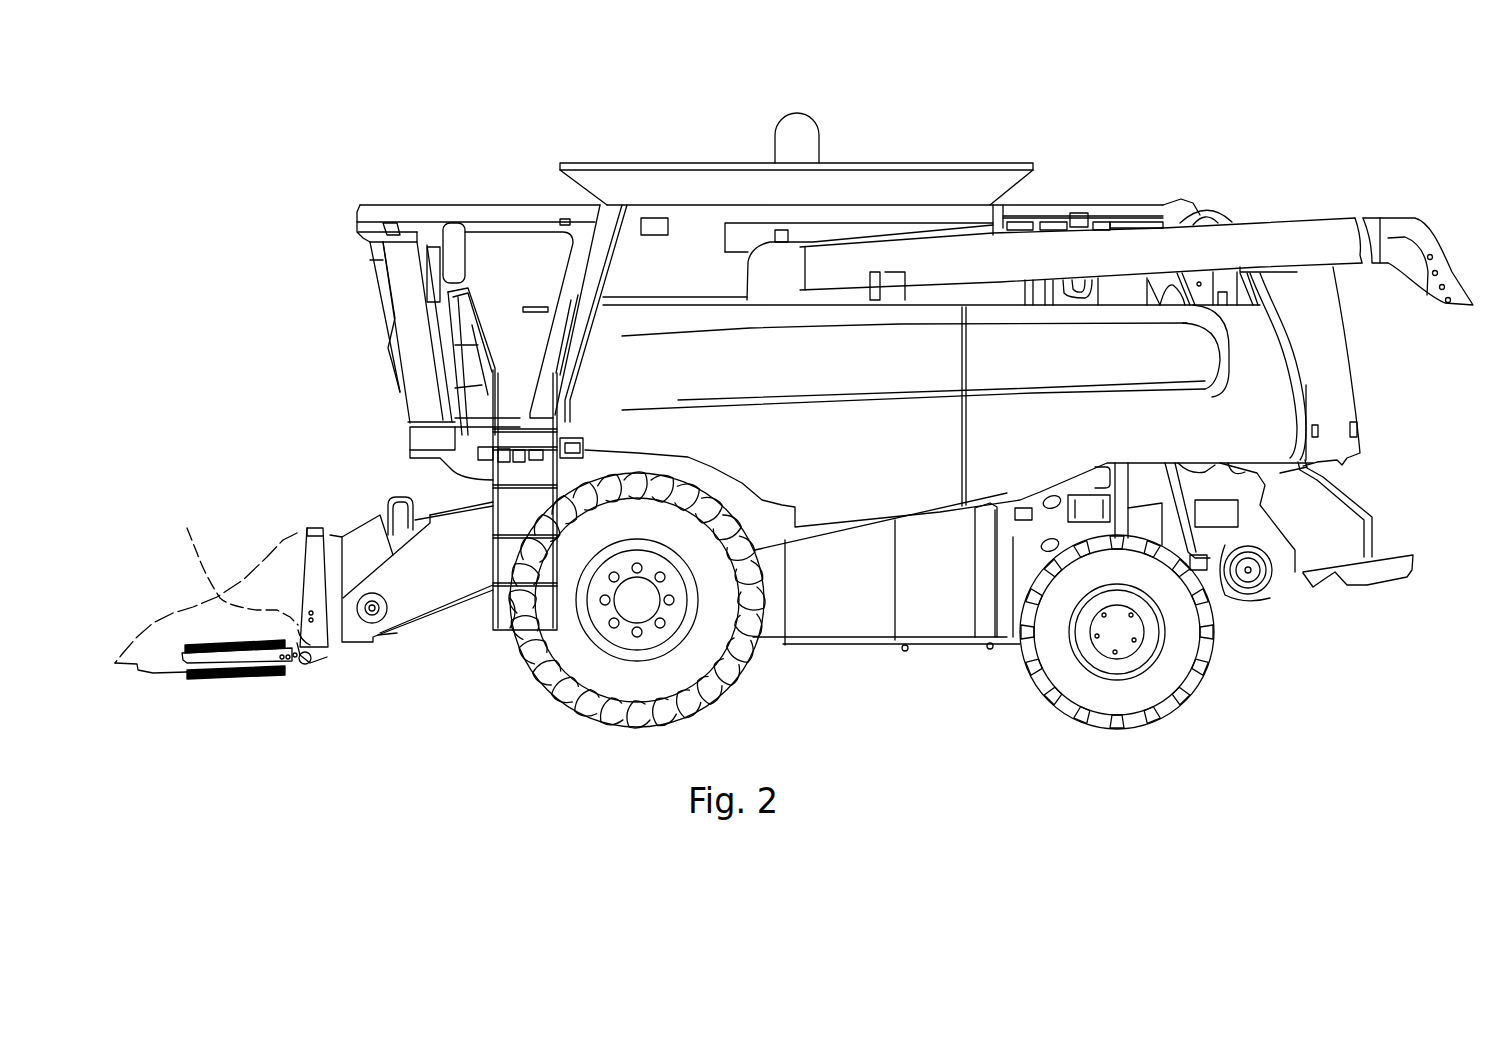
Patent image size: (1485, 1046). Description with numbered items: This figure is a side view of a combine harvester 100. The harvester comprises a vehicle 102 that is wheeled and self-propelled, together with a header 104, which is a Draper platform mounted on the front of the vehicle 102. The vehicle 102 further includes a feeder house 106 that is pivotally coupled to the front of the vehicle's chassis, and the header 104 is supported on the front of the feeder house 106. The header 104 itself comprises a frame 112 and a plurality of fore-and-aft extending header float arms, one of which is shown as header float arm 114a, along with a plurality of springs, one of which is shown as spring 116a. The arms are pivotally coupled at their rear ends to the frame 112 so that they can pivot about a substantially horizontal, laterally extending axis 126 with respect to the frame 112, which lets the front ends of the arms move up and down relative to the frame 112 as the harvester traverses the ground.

The combine harvester 100 is at (277, 190).
The vehicle 102 is at (522, 210).
The header 104 is at (253, 527).
The feeder house 106 is at (450, 547).
The frame 112 is at (325, 528).
The header float arm 114a is at (229, 664).
The spring 116a is at (206, 587).
The axis 126 is at (310, 660).